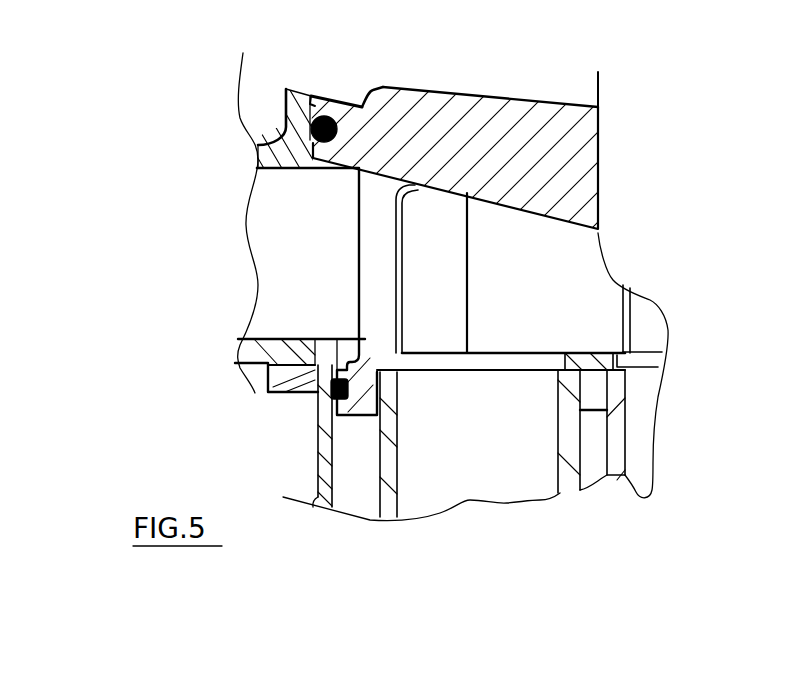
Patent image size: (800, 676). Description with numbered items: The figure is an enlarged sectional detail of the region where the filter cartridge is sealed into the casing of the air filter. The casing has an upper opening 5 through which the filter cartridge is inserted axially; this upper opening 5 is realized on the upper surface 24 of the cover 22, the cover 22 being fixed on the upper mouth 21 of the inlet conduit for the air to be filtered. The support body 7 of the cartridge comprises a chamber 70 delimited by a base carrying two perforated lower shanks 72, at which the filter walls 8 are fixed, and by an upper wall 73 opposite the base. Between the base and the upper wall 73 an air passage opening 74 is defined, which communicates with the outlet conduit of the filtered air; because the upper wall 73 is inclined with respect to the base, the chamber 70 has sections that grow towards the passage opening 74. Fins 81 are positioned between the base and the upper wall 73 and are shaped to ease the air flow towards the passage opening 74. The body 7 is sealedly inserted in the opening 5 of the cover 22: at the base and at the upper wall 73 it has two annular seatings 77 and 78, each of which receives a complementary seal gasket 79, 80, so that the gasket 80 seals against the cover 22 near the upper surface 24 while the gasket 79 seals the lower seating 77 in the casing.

The upper opening 5 is at (313, 100).
The support body 7 is at (522, 92).
The filter wall 8 is at (492, 477).
The upper mouth 21 is at (334, 362).
The cover 22 is at (286, 165).
The upper surface 24 is at (300, 90).
The chamber 70 is at (553, 291).
The perforated lower shank 72 is at (560, 460).
The upper wall 73 is at (563, 221).
The air passage opening 74 is at (358, 220).
The annular seating 77 is at (318, 456).
The annular seating 78 is at (437, 110).
The seal gasket 79 is at (330, 390).
The seal gasket 80 is at (343, 101).
The fin 81 is at (396, 258).